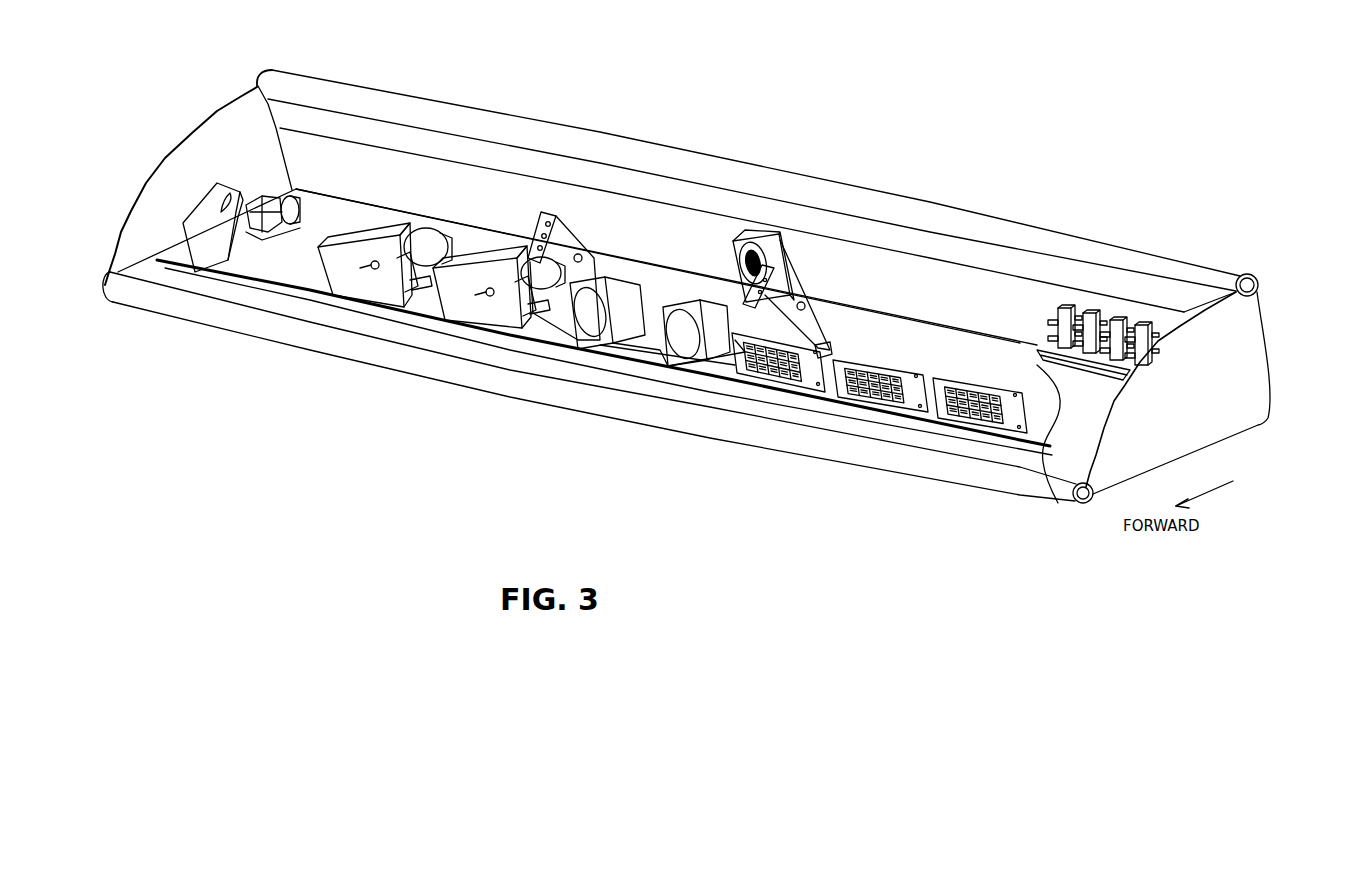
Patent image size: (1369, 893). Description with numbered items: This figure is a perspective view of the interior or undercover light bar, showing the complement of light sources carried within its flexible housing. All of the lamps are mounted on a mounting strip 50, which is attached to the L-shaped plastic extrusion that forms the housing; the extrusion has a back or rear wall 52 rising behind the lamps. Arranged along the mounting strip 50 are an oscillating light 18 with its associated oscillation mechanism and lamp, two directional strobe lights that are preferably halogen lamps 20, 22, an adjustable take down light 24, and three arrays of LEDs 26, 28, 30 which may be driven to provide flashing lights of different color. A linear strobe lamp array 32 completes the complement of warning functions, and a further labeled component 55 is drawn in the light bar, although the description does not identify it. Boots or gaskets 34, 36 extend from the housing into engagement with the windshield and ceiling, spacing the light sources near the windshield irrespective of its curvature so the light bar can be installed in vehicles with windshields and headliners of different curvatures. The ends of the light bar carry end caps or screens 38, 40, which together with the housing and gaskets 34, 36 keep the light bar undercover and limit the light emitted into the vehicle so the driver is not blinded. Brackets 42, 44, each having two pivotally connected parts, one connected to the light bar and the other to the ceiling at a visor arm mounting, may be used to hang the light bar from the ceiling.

The oscillating light 18 is at (182, 255).
The halogen lamp 20 is at (341, 300).
The halogen lamp 22 is at (458, 307).
The adjustable take down light 24 is at (636, 352).
The array of LEDs 26 is at (765, 383).
The array of LEDs 28 is at (866, 400).
The array of LEDs 30 is at (972, 425).
The linear strobe lamp array 32 is at (1053, 447).
The boot or gasket 34 is at (545, 410).
The boot or gasket 36 is at (398, 93).
The end cap or screen 38 is at (1208, 385).
The end cap or screen 40 is at (211, 157).
The bracket 42 is at (600, 260).
The bracket 44 is at (822, 350).
The mounting strip 50 is at (259, 265).
The back or rear wall 52 is at (318, 157).
The speaker assembly 55 is at (772, 225).